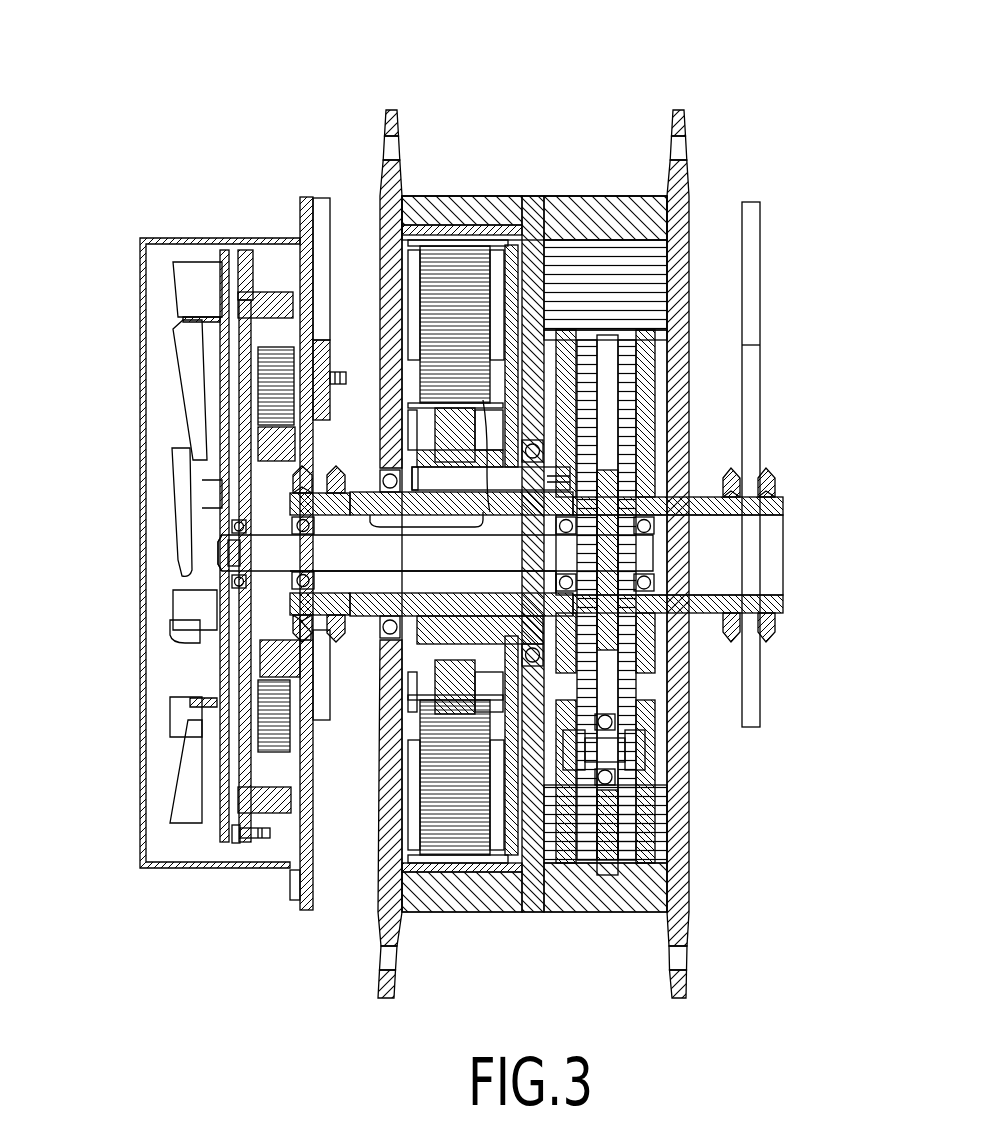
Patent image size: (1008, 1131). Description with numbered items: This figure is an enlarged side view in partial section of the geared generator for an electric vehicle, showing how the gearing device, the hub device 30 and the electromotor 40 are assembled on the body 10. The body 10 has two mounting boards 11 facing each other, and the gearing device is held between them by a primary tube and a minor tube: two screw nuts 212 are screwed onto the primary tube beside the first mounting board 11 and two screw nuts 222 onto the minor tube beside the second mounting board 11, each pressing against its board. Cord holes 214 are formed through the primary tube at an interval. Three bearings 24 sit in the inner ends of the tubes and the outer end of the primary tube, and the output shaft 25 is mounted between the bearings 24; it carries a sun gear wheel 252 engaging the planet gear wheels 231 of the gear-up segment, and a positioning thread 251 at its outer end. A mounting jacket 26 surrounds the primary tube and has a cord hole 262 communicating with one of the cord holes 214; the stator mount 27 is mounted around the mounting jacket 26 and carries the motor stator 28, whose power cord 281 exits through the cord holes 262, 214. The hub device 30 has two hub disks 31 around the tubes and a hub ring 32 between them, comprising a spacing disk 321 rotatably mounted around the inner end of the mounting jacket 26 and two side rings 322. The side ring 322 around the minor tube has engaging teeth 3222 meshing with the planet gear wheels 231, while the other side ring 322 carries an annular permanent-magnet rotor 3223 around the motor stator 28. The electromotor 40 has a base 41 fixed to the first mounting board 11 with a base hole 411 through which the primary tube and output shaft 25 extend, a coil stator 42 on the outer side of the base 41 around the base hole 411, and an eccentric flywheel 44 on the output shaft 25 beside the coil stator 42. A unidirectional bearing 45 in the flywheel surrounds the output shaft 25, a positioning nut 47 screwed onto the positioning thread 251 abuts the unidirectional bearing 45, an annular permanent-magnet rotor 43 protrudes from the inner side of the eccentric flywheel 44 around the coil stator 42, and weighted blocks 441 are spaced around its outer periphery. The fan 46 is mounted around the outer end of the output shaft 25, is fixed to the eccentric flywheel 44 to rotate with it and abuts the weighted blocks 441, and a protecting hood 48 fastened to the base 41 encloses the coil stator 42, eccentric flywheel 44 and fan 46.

The body 10 is at (791, 252).
The mounting boards 11 is at (752, 378).
The hub device 30 is at (597, 66).
The hub ring 32 is at (513, 152).
The spacing disk 321 is at (537, 208).
The side rings 322 is at (462, 206).
The engaging teeth 3222 is at (611, 870).
The permanent-magnet rotor 3223 is at (432, 878).
The hub disks 31 is at (682, 136).
The motor stator 28 is at (432, 274).
The stator mount 27 is at (510, 872).
The mounting jacket 26 is at (445, 633).
The cord hole 262 is at (500, 468).
The power cord 281 is at (440, 527).
The cord holes 214 is at (362, 444).
The screw nuts 212 is at (338, 614).
The output shaft 25 is at (644, 563).
The bearings 24 is at (656, 528).
The screw nuts 222 is at (777, 486).
The sun gear wheel 252 is at (606, 648).
The planet gear wheels 231 is at (630, 822).
The electromotor 40 is at (110, 273).
The base 41 is at (309, 200).
The base hole 411 is at (312, 632).
The coil stator 42 is at (292, 752).
The permanent-magnet rotor 43 is at (285, 808).
The eccentric flywheel 44 is at (265, 775).
The weighted blocks 441 is at (240, 848).
The unidirectional bearing 45 is at (240, 584).
The fan 46 is at (200, 275).
The positioning nut 47 is at (238, 533).
The protecting hood 48 is at (152, 240).
The positioning thread 251 is at (226, 548).